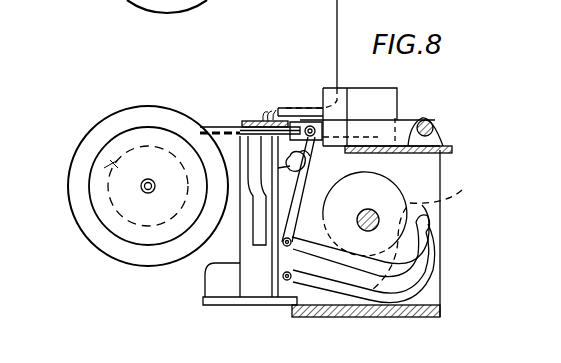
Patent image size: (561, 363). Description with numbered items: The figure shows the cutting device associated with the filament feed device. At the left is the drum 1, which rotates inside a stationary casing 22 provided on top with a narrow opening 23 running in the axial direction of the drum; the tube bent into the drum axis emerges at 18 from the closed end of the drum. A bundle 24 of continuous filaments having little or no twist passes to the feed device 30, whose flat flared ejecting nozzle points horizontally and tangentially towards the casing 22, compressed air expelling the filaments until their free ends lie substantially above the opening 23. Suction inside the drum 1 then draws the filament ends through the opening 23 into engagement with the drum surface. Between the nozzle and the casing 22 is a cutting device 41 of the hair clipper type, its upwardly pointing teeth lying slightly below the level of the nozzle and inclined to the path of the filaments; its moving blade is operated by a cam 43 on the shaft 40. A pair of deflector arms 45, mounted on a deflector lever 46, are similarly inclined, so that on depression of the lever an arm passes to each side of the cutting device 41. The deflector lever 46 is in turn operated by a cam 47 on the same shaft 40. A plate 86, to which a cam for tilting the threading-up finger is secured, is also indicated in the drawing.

The drum 1 is at (96, 160).
The stationary casing 22 is at (96, 184).
The narrow opening 23 is at (168, 132).
The tube emergence point 18 is at (147, 193).
The deflector arms 45 is at (226, 127).
The cutting device 41 is at (252, 121).
The bundle of continuous filaments 24 is at (272, 110).
The feed device 30 is at (385, 112).
The deflector lever 46 is at (408, 118).
The plate 86 is at (352, 152).
The cam 43 is at (365, 214).
The shaft 40 is at (360, 222).
The cam 47 is at (462, 190).